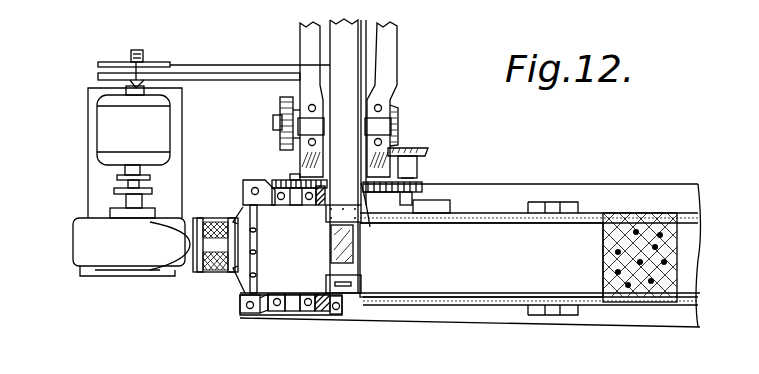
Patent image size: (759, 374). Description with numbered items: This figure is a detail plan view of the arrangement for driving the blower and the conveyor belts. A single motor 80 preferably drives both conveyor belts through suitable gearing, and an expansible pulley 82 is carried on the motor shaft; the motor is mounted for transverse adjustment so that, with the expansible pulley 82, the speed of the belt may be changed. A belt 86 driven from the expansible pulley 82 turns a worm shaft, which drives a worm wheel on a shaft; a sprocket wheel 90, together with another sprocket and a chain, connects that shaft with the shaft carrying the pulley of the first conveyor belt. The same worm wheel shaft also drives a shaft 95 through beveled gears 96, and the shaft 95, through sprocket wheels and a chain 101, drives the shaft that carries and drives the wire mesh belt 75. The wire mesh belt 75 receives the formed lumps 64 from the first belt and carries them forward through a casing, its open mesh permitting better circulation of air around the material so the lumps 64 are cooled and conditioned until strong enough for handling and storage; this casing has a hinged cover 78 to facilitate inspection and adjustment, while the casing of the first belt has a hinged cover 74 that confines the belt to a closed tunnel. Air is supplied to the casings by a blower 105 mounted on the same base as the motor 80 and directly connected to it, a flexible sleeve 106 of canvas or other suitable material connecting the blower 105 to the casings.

The lumps 64 is at (650, 280).
The hinged cover 74 is at (343, 78).
The wire mesh belt 75 is at (630, 225).
The hinged cover 78 is at (481, 260).
The motor 80 is at (115, 128).
The expansible pulley 82 is at (116, 62).
The belt 86 is at (221, 73).
The sprocket wheel 90 is at (290, 100).
The shaft 95 is at (418, 177).
The beveled gears 96 is at (400, 118).
The chain 101 is at (372, 228).
The blower 105 is at (100, 256).
The flexible sleeve 106 is at (213, 270).